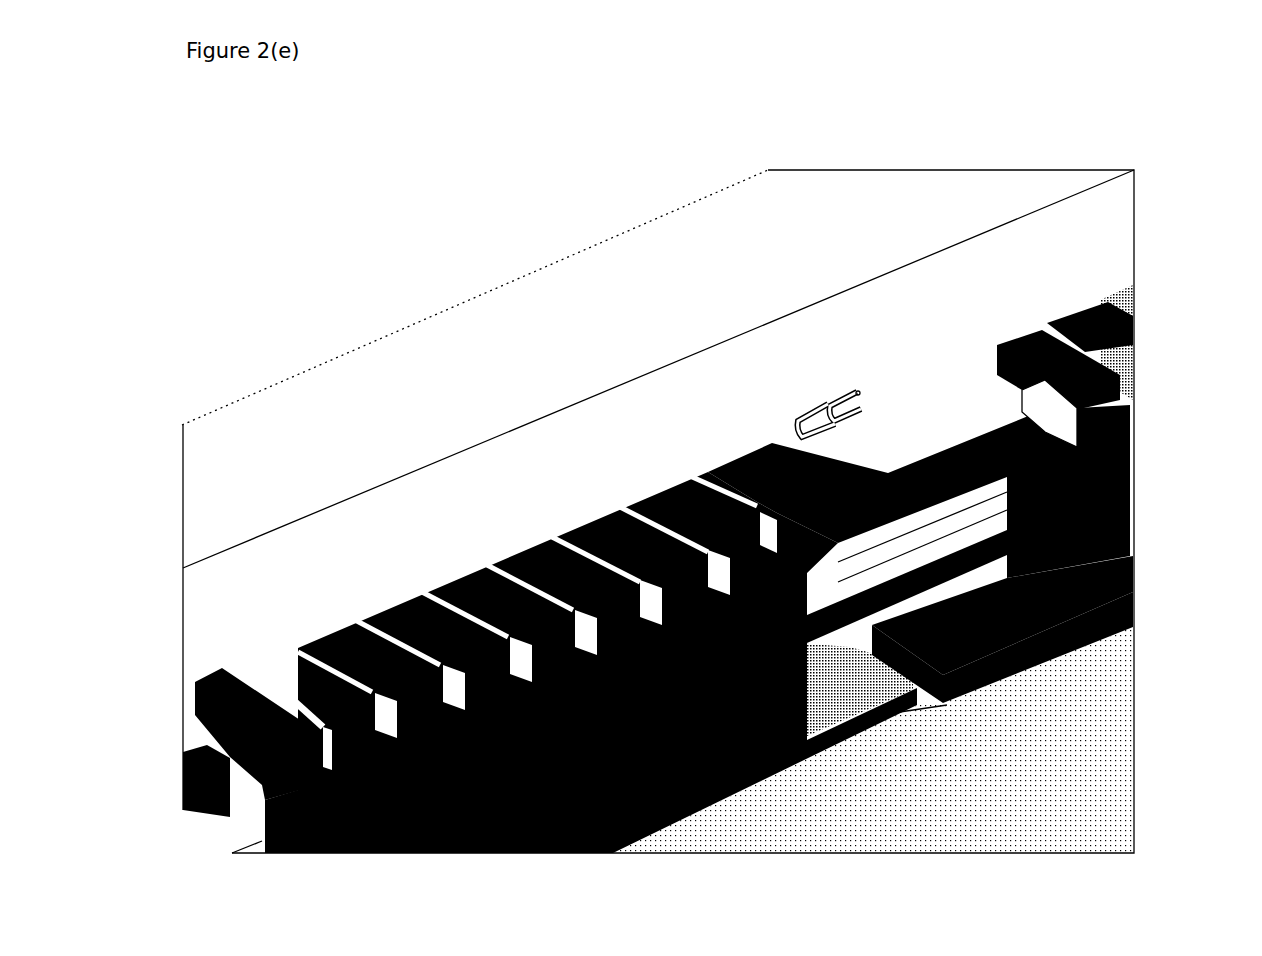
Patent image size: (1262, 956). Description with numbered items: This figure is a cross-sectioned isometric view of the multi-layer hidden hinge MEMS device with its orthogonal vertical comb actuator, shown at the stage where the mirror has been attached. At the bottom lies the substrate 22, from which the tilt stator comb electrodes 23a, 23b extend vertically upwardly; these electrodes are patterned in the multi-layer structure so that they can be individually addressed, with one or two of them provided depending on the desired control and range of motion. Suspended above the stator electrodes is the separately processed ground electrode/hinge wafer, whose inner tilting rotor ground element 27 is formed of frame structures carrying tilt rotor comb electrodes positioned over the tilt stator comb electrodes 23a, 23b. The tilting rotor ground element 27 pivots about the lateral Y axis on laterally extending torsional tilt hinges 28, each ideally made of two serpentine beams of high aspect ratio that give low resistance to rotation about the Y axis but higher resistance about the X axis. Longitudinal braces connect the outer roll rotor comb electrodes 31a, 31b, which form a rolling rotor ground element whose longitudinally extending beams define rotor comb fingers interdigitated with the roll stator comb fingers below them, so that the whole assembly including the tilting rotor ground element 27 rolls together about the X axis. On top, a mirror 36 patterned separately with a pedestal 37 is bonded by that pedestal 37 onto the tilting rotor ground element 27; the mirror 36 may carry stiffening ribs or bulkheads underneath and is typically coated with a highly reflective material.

The substrate 22 is at (1088, 752).
The tilt stator comb electrode 23a is at (1108, 633).
The tilt stator comb electrode 23b is at (557, 813).
The tilting rotor ground element 27 is at (1136, 485).
The tilt hinge 28 is at (810, 395).
The roll rotor comb electrode 31a is at (1125, 323).
The roll rotor comb electrode 31b is at (227, 732).
The mirror 36 is at (525, 427).
The pedestal 37 is at (922, 400).